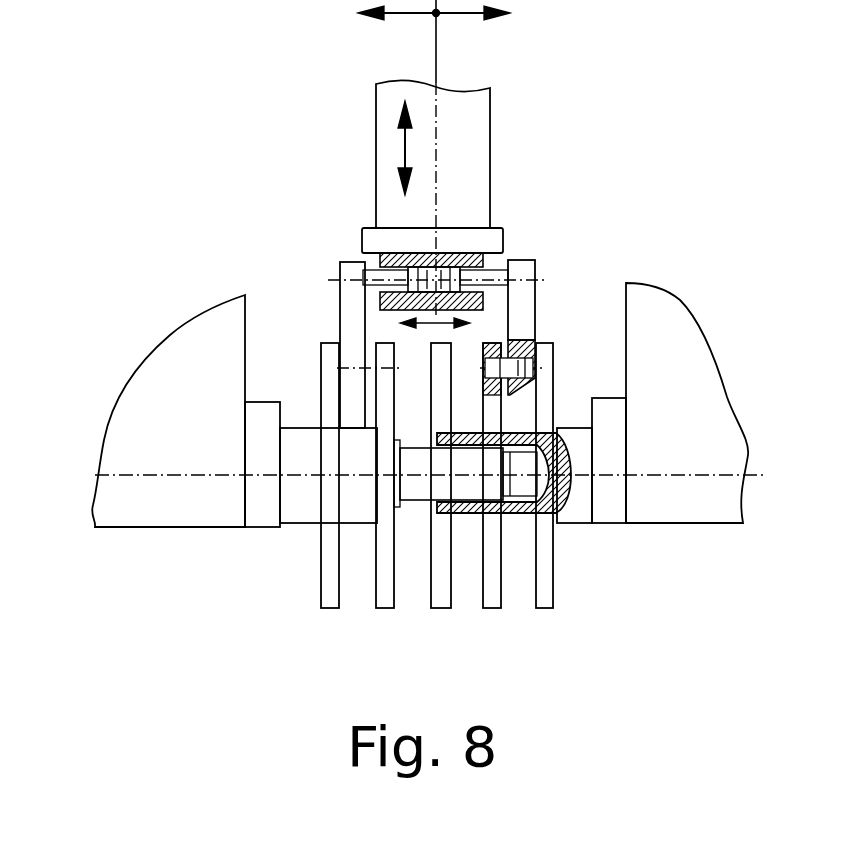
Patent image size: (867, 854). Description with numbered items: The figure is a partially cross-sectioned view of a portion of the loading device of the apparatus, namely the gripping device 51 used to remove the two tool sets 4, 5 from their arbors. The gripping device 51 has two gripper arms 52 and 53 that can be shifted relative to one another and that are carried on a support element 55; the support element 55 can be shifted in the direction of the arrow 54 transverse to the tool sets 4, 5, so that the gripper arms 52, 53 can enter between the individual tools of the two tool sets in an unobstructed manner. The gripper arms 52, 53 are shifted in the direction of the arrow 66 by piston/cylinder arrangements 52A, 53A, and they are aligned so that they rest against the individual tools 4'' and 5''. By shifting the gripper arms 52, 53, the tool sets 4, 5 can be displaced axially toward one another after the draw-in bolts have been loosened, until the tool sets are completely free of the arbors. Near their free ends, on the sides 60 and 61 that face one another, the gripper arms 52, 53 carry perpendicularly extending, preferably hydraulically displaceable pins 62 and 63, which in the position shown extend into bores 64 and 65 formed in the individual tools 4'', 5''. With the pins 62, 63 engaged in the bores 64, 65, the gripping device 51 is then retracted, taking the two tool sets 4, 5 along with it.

The tool set 4 is at (268, 483).
The individual tool 4'' is at (367, 508).
The tool set 5 is at (585, 489).
The individual tool 5'' is at (512, 508).
The gripping device 51 is at (318, 203).
The gripper arm 52 is at (352, 308).
The piston/cylinder arrangement 52A is at (380, 263).
The gripper arm 53 is at (527, 317).
The piston/cylinder arrangement 53A is at (487, 272).
The arrow 54 is at (408, 148).
The support element 55 is at (473, 127).
The side 60 is at (363, 325).
The side 61 is at (515, 331).
The pin 62 is at (437, 328).
The pin 63 is at (533, 380).
The bore 64 is at (377, 380).
The bore 65 is at (515, 393).
The arrow 66 is at (400, 364).